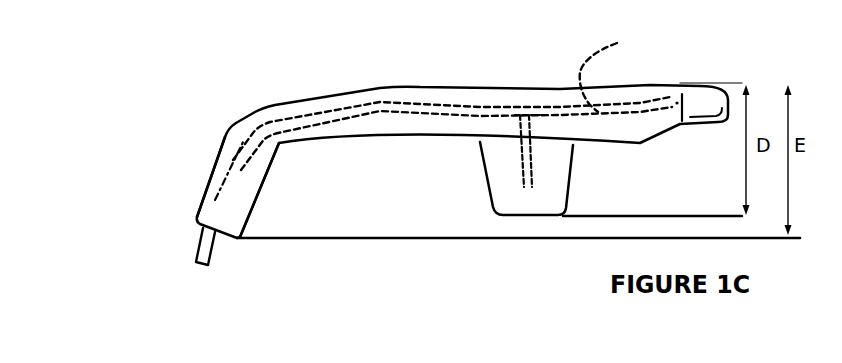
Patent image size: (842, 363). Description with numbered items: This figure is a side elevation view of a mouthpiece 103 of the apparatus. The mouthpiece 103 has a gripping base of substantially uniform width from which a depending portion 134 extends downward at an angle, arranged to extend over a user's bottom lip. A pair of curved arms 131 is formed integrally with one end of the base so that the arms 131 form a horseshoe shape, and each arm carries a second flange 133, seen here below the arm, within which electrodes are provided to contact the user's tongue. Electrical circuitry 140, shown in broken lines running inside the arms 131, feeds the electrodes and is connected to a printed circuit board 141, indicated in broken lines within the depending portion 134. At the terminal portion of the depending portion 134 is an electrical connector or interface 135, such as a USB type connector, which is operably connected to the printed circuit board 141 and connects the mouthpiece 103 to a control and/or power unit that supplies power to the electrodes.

The mouthpiece 103 is at (218, 102).
The curved arm 131 is at (486, 101).
The second flange 133 is at (505, 185).
The depending portion 134 is at (212, 178).
The electrical connector or interface 135 is at (203, 241).
The electrical circuitry 140 is at (619, 71).
The printed circuit board 141 is at (208, 221).